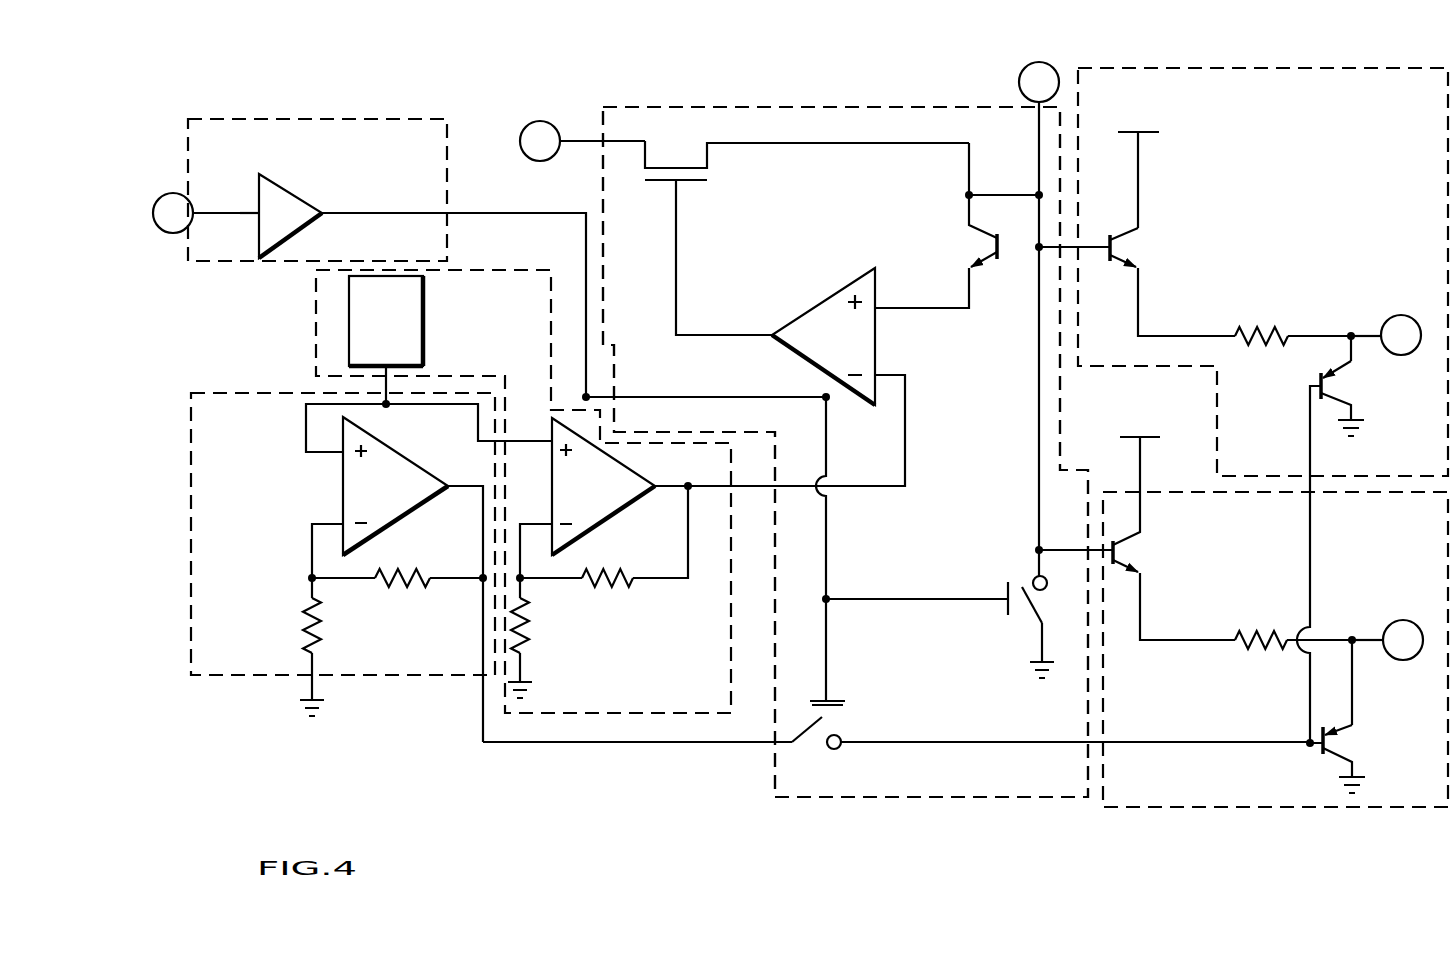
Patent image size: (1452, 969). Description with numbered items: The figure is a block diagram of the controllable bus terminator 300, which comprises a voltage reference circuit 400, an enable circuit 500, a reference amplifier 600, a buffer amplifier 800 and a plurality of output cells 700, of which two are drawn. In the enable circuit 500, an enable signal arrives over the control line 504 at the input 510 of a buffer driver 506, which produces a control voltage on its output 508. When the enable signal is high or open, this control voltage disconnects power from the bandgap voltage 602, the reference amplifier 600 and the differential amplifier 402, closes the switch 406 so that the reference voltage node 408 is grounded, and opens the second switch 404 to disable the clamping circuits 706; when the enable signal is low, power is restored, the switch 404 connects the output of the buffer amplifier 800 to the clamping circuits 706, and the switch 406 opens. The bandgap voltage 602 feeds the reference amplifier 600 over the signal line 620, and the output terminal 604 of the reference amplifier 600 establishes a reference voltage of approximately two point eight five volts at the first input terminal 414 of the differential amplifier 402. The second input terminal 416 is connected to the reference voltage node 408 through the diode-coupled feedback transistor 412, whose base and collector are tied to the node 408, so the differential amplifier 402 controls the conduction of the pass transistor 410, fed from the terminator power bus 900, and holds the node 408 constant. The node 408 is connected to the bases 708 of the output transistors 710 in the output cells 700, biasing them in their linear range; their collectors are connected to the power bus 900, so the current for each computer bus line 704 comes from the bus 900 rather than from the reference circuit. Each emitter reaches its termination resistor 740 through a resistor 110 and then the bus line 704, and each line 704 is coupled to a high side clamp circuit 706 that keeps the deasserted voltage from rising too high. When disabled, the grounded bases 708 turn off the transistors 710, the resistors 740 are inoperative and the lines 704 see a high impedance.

The enable circuit 500 is at (277, 117).
The control line 504 is at (245, 218).
The buffer driver 506 is at (283, 193).
The output 508 is at (342, 212).
The input 510 is at (257, 193).
The terminator power bus 900 is at (578, 140).
The pass transistor 410 is at (650, 158).
The voltage reference circuit 400 is at (776, 104).
The reference voltage node 408 is at (1037, 137).
The differential amplifier 402 is at (836, 292).
The second input terminal 416 is at (900, 305).
The first input terminal 414 is at (885, 370).
The feedback transistor 412 is at (992, 268).
The disable switch 406 is at (1025, 620).
The second switch 404 is at (836, 750).
The controllable bus terminator 300 is at (688, 776).
The reference amplifier 600 is at (567, 714).
The bandgap voltage 602 is at (423, 298).
The signal line 620 is at (525, 440).
The output terminal 604 is at (672, 490).
The buffer amplifier 800 is at (241, 676).
The output cells 700 is at (1243, 68).
The bases 708 is at (1090, 245).
The output transistors 710 is at (1135, 247).
The resistor 110 is at (1263, 474).
The termination resistors 740 is at (1290, 330).
The computer bus line 704 is at (1375, 318).
The negative clamping circuit 706 is at (1340, 385).